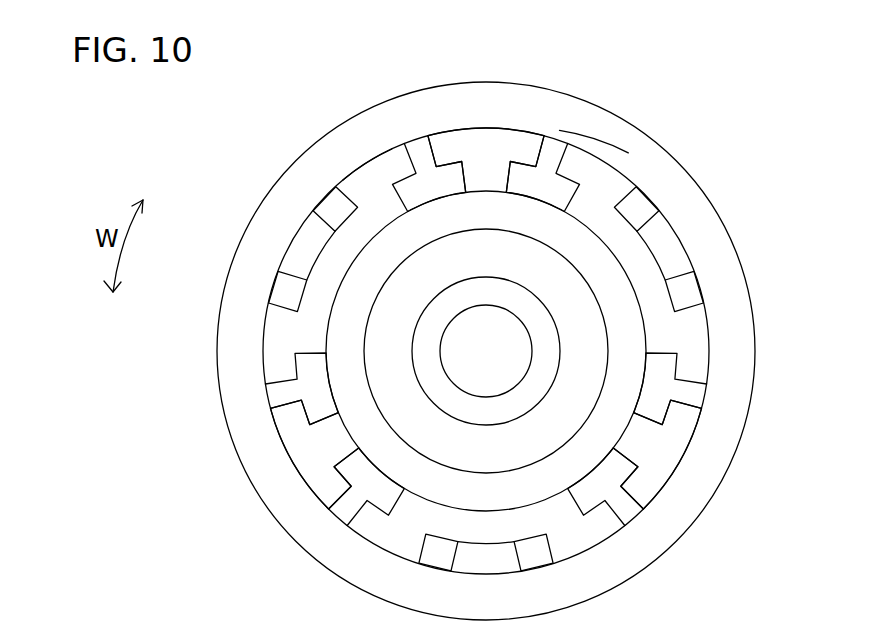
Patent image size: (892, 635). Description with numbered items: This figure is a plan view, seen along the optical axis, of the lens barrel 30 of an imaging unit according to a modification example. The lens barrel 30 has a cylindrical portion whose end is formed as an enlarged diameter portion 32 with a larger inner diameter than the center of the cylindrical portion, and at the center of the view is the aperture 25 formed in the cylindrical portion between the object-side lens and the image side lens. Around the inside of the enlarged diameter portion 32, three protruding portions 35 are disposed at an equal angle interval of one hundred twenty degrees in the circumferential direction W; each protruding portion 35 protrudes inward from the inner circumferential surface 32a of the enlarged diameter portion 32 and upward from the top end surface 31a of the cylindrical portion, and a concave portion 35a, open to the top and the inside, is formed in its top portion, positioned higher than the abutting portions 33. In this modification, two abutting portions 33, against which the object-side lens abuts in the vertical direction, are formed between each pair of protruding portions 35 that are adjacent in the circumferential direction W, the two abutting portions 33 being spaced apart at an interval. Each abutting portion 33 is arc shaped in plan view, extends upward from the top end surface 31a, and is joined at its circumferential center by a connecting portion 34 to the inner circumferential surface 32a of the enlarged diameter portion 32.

The lens barrel 30 is at (319, 105).
The enlarged diameter portion 32 is at (751, 410).
The inner circumferential surface 32a is at (605, 172).
The top end surface 31a is at (378, 177).
The aperture 25 is at (487, 417).
The connecting portion 34 is at (437, 152).
The abutting portion 33 is at (522, 176).
The protruding portion 35 is at (270, 305).
The concave portion 35a is at (318, 213).